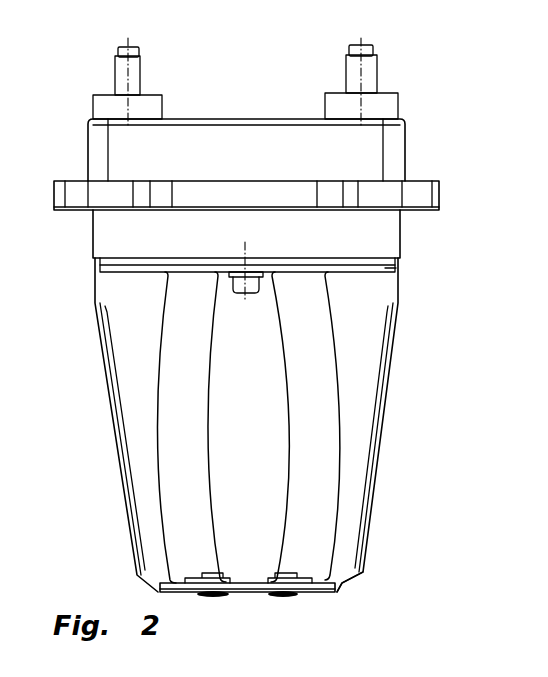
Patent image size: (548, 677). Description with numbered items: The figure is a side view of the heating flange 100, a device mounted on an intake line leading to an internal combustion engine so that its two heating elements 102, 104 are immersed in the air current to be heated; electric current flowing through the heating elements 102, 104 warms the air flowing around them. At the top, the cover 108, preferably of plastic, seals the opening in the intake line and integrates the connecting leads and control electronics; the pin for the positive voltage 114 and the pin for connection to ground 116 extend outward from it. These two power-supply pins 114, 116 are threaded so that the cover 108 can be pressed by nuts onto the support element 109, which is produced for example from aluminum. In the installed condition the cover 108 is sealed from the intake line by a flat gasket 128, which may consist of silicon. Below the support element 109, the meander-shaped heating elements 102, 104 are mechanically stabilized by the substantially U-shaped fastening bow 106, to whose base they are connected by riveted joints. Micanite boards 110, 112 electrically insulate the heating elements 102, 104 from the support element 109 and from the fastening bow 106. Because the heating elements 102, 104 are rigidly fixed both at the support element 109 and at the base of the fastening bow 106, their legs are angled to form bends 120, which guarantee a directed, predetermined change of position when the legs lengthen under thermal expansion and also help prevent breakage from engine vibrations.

The heating flange 100 is at (97, 514).
The heating element 102 is at (330, 543).
The heating element 104 is at (216, 494).
The fastening bow 106 is at (392, 372).
The cover 108 is at (405, 152).
The support element 109 is at (433, 194).
The micanite board 110 is at (330, 594).
The micanite board 112 is at (400, 268).
The pin for the positive voltage 114 is at (370, 70).
The pin for connection to ground 116 is at (120, 82).
The bend 120 is at (342, 422).
The flat gasket 128 is at (437, 212).